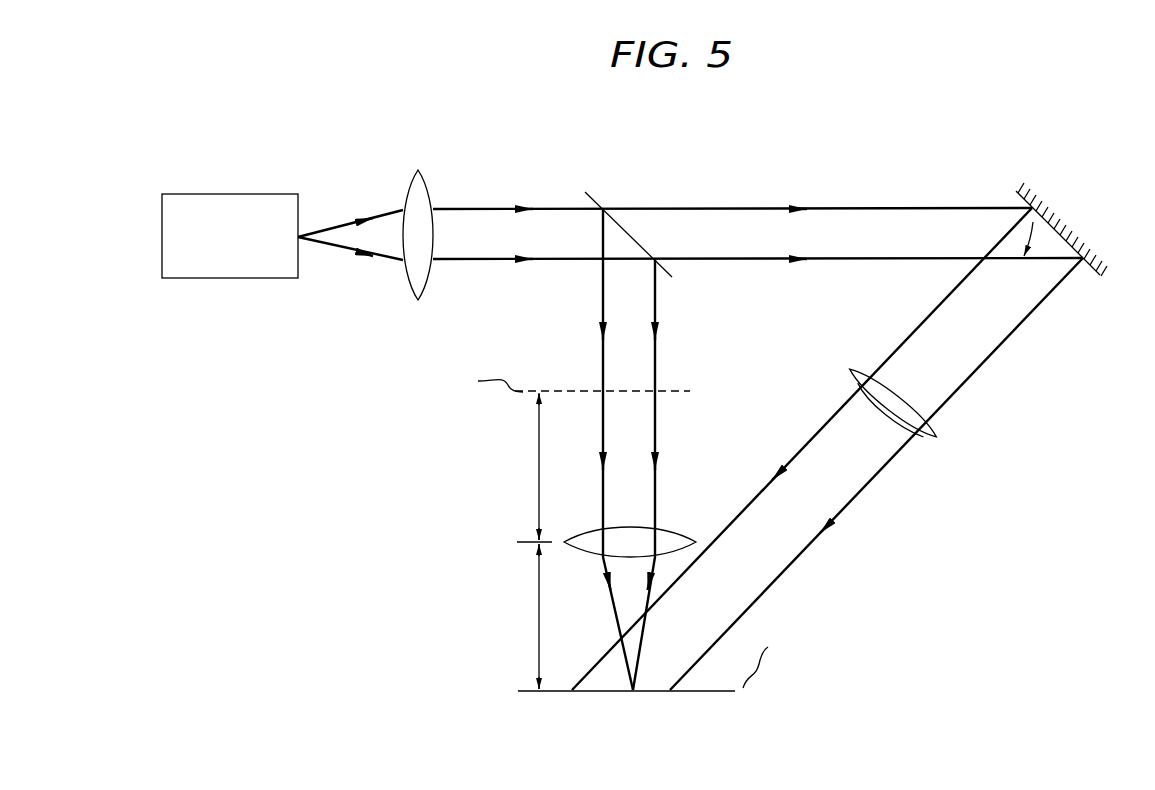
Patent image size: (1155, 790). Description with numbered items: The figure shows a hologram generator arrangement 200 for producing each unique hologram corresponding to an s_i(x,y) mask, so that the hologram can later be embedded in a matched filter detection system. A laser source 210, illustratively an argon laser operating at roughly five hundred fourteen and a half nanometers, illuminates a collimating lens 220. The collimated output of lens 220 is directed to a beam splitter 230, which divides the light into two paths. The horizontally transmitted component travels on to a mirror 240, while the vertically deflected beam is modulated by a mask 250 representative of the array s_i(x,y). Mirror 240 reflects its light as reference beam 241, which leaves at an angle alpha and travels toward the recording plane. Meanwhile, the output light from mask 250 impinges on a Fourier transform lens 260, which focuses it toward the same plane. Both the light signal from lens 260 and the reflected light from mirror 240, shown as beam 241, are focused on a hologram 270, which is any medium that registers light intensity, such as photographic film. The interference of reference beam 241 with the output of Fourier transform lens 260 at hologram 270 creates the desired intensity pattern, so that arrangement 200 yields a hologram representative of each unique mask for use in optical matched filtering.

The hologram generator arrangement 200 is at (833, 133).
The laser source 210 is at (192, 194).
The collimating lens 220 is at (425, 285).
The beam splitter 230 is at (667, 273).
The mirror 240 is at (1100, 271).
The reference beam 241 is at (937, 437).
The mask 250 is at (676, 390).
The Fourier transform lens 260 is at (673, 532).
The hologram 270 is at (712, 692).